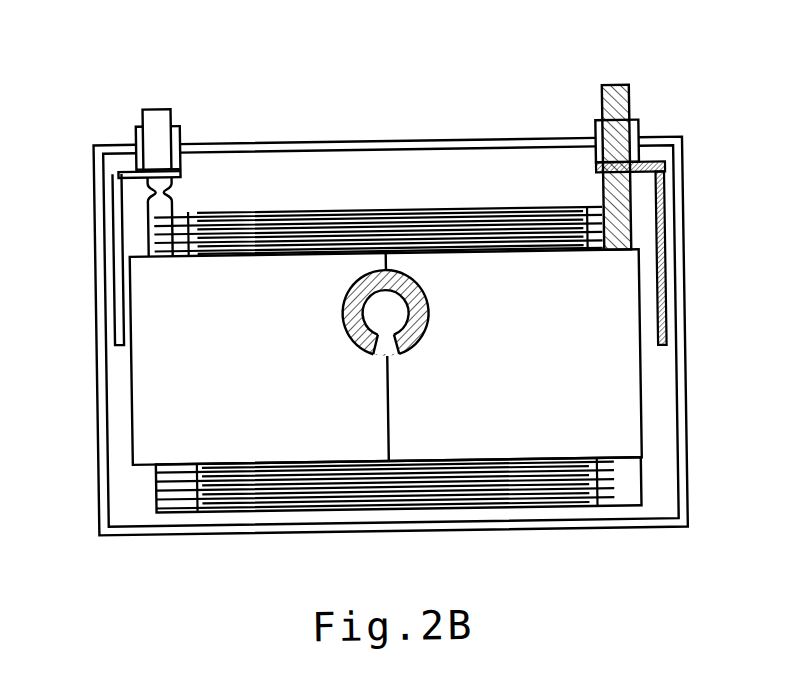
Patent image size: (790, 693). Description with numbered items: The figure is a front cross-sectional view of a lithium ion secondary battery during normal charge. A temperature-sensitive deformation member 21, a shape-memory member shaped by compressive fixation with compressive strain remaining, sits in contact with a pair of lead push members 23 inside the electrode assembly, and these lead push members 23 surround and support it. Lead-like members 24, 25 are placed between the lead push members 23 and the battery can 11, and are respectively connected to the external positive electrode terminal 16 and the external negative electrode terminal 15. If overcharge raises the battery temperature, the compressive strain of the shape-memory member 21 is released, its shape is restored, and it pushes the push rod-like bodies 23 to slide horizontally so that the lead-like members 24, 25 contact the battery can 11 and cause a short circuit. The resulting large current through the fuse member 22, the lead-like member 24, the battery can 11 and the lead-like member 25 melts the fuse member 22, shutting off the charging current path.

The battery can 11 is at (498, 145).
The external negative electrode terminal 15 is at (627, 88).
The external positive electrode terminal 16 is at (161, 114).
The temperature-sensitive deformation member 21 is at (393, 270).
The fuse member 22 is at (152, 195).
The lead push members 23 is at (138, 451).
The lead-like member 24 is at (117, 318).
The lead-like member 25 is at (663, 339).